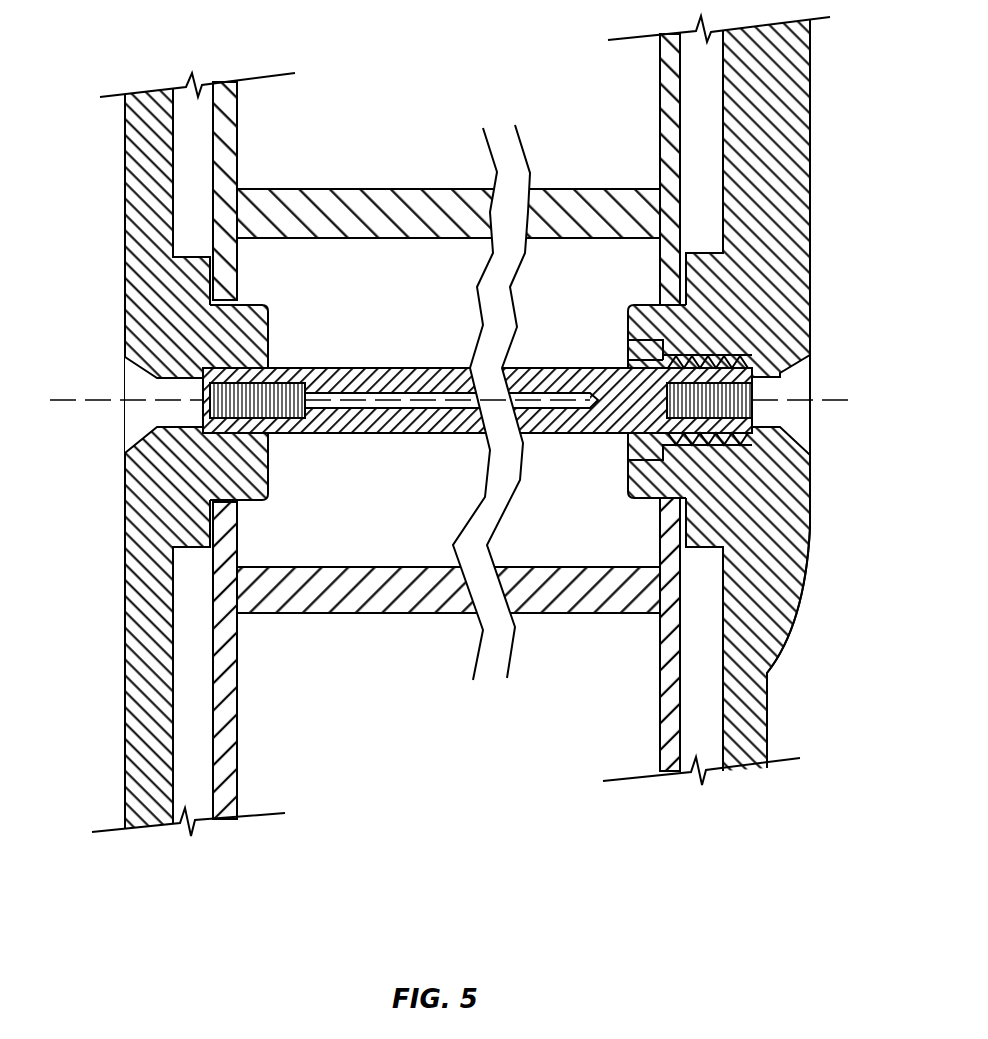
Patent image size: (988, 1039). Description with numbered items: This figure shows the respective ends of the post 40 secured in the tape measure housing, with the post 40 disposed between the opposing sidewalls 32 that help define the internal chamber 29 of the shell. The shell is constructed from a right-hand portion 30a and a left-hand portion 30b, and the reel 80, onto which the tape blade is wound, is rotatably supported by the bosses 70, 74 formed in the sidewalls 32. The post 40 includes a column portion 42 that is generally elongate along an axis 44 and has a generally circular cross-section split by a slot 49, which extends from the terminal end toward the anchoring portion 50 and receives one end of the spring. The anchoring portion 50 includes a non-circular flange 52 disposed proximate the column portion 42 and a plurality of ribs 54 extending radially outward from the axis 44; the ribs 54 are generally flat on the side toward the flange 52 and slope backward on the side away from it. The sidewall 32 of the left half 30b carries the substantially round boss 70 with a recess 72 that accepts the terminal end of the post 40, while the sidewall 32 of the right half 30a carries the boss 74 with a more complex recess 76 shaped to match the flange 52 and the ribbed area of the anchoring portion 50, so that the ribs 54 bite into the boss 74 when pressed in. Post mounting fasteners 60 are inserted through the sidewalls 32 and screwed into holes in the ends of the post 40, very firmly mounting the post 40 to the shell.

The internal chamber 29 is at (202, 705).
The right-hand portion 30a is at (767, 712).
The left-hand portion 30b is at (125, 670).
The sidewalls 32 is at (130, 174).
The post 40 is at (477, 399).
The column portion 42 is at (477, 410).
The axis 44 is at (80, 404).
The slot 49 is at (357, 437).
The anchoring portion 50 is at (624, 455).
The flange 52 is at (628, 332).
The ribs 54 is at (743, 358).
The fastener 60 is at (133, 388).
The boss 70 is at (268, 342).
The recess 72 is at (275, 368).
The boss 74 is at (628, 346).
The recess 76 is at (628, 462).
The reel 80 is at (355, 200).